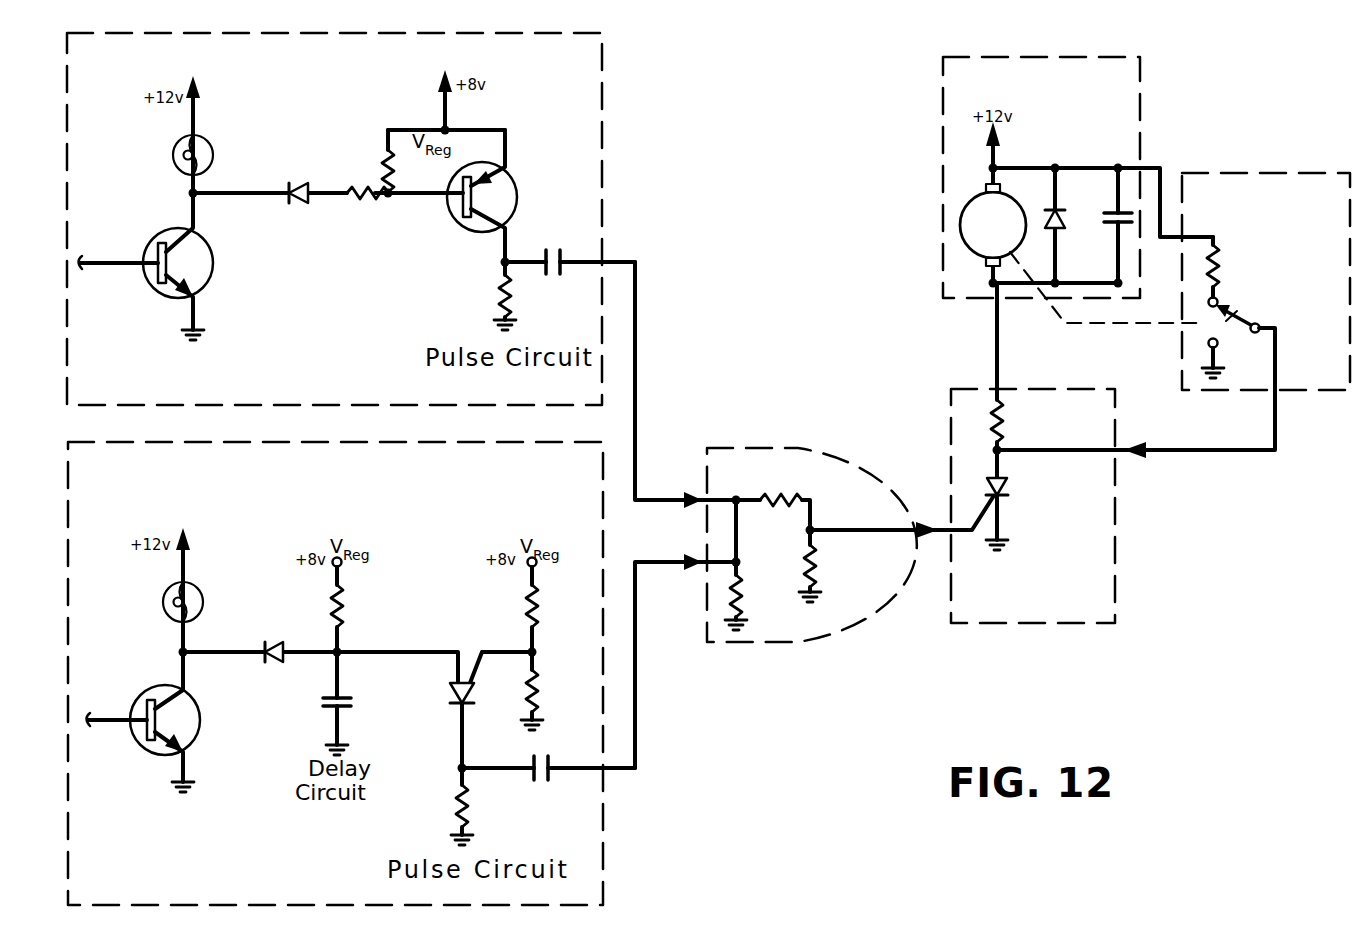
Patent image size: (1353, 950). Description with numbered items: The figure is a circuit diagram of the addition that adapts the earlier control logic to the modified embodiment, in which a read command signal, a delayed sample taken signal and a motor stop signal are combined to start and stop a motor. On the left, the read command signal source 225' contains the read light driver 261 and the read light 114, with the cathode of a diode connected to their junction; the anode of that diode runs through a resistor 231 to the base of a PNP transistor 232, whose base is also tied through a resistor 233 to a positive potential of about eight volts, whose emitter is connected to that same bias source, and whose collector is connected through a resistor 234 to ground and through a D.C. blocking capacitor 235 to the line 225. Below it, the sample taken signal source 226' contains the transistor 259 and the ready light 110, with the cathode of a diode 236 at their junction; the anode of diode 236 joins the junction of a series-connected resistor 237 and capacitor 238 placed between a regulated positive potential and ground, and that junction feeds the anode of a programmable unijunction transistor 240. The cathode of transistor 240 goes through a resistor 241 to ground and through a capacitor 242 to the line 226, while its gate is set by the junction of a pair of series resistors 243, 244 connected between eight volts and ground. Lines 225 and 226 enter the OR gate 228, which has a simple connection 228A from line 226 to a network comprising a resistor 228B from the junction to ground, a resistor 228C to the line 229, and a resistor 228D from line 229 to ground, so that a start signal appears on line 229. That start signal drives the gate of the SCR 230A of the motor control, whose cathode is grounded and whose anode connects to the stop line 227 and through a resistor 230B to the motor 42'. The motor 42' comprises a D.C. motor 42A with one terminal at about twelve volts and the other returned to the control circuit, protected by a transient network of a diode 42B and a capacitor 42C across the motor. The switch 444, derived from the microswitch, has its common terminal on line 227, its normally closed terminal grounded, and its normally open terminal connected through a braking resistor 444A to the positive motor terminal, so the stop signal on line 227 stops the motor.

The source 225' is at (334, 219).
The source 226' is at (335, 673).
The read light 114 is at (227, 157).
The ready indicator light 110 is at (225, 607).
The resistor 231 is at (361, 206).
The PNP transistor 232 is at (515, 197).
The resistor 233 is at (385, 160).
The resistor 234 is at (498, 299).
The D.C. blocking capacitor 235 is at (578, 238).
The line 225 is at (684, 364).
The read light driver 261 is at (213, 279).
The diode 236 is at (273, 664).
The resistor 237 is at (341, 600).
The capacitor 238 is at (352, 698).
The programmable unijunction transistor 240 is at (448, 691).
The resistor 241 is at (454, 814).
The capacitor 242 is at (546, 778).
The resistor 243 is at (524, 608).
The resistor 244 is at (538, 688).
The line 226 is at (676, 686).
The transistor 259 is at (198, 732).
The OR gate 228 is at (766, 670).
The simple connection 228A is at (738, 508).
The resistor 228B is at (768, 578).
The resistor 228C is at (790, 496).
The resistor 228D is at (816, 554).
The line 229 is at (916, 536).
The SCR 230A is at (1006, 498).
The resistor 230B is at (1003, 424).
The line 227 is at (1244, 452).
The motor 42' is at (1008, 177).
The D.C. motor 42A is at (968, 237).
The diode 42B is at (1062, 220).
The capacitor 42C is at (1110, 222).
The switch 444 is at (1266, 281).
The braking resistor 444A is at (1222, 260).